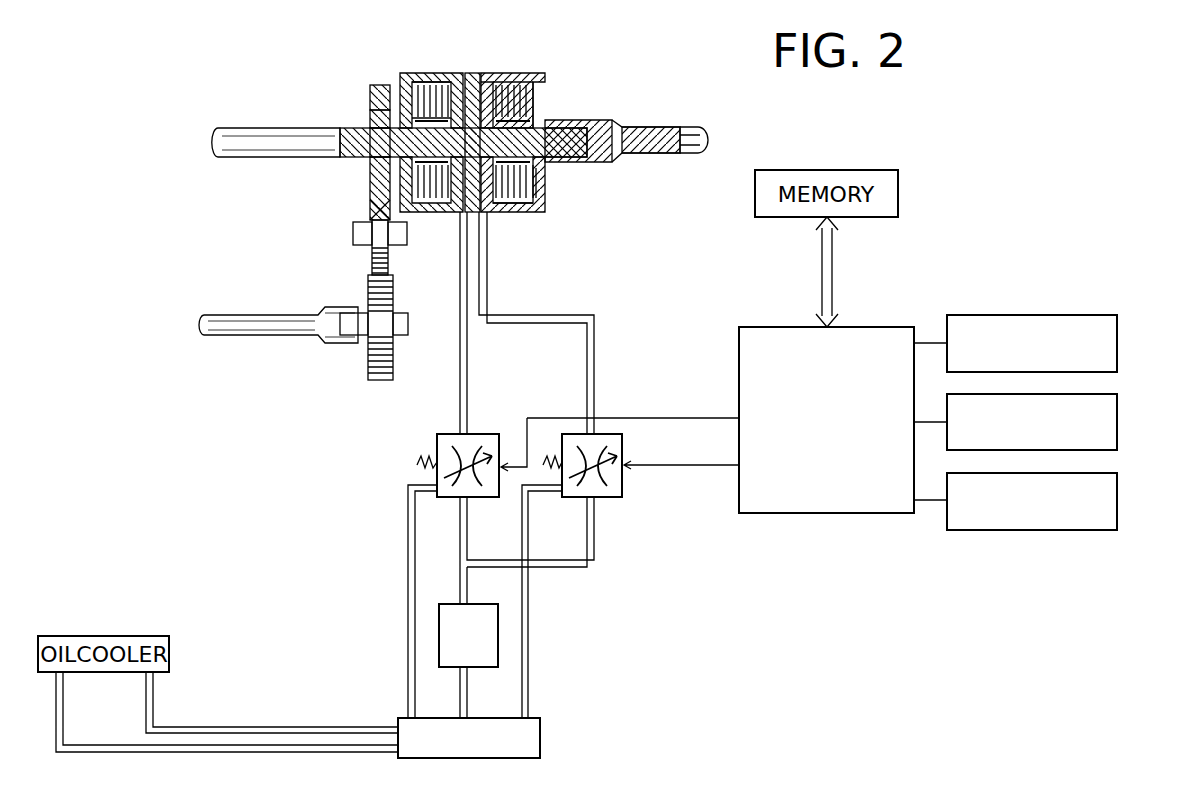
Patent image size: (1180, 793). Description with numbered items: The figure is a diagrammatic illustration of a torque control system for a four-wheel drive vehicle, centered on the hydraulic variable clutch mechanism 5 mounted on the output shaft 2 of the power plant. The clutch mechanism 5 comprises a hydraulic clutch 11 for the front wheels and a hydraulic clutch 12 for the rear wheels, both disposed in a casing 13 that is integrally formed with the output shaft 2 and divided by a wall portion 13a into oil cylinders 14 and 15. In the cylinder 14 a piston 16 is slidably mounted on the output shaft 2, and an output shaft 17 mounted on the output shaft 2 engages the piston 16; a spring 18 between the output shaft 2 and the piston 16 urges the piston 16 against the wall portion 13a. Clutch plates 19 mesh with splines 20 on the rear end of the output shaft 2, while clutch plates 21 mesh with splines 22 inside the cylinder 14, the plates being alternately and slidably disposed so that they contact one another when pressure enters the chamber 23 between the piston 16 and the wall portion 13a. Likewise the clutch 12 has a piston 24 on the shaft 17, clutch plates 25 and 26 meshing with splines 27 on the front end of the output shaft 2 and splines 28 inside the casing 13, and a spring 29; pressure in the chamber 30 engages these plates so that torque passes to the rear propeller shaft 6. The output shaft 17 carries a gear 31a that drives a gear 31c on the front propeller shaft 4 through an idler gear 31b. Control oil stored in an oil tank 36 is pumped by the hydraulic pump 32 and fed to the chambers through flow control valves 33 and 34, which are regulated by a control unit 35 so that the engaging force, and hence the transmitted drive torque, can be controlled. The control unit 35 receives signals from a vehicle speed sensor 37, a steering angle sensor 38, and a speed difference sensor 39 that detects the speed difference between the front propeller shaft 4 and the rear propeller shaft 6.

The output shaft 2 is at (264, 152).
The front propeller shaft 4 is at (263, 320).
The hydraulic variable clutch mechanism 5 is at (472, 72).
The rear propeller shaft 6 is at (662, 153).
The hydraulic clutch 11 is at (428, 73).
The hydraulic clutch 12 is at (505, 75).
The casing 13 is at (400, 78).
The wall portion 13a is at (486, 232).
The oil cylinder 14 is at (447, 214).
The oil cylinder 15 is at (548, 204).
The piston 16 is at (462, 214).
The output shaft 17 is at (407, 234).
The spring 18 is at (368, 157).
The clutch plates 19 is at (445, 73).
The splines 20 is at (400, 122).
The clutch plates 21 is at (370, 100).
The splines 22 is at (415, 75).
The chamber 23 is at (483, 212).
The piston 24 is at (521, 206).
The clutch plates 25 is at (546, 183).
The clutch plates 26 is at (548, 193).
The splines 27 is at (565, 126).
The splines 28 is at (520, 75).
The spring 29 is at (538, 108).
The chamber 30 is at (500, 212).
The gear 31a is at (372, 186).
The idler gear 31b is at (372, 252).
The gear 31c is at (368, 363).
The hydraulic pump 32 is at (488, 668).
The flow control valve 33 is at (441, 432).
The flow control valve 34 is at (608, 498).
The control unit 35 is at (785, 513).
The oil tank 36 is at (541, 738).
The vehicle speed sensor 37 is at (1118, 343).
The steering angle sensor 38 is at (1118, 422).
The speed difference sensor 39 is at (1118, 501).